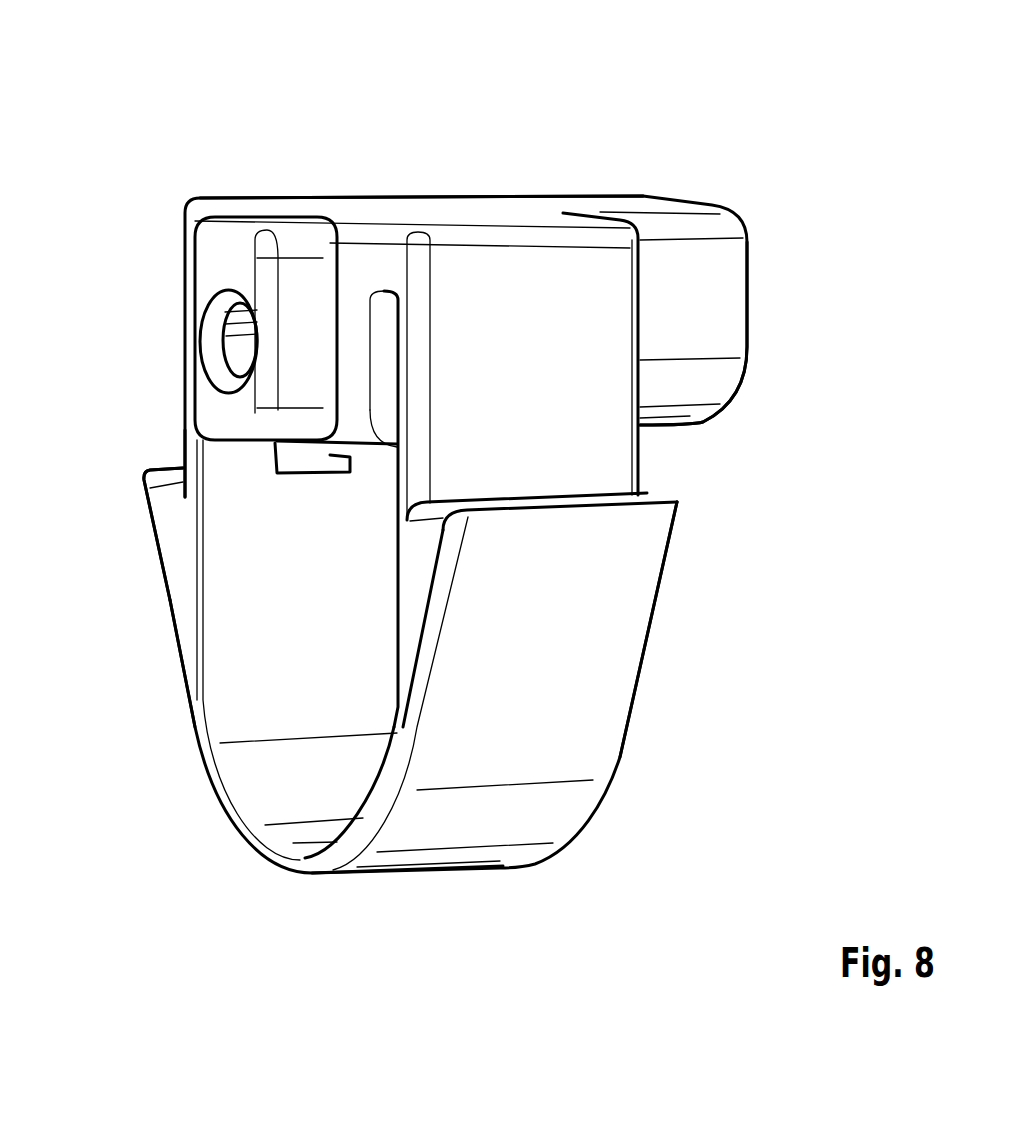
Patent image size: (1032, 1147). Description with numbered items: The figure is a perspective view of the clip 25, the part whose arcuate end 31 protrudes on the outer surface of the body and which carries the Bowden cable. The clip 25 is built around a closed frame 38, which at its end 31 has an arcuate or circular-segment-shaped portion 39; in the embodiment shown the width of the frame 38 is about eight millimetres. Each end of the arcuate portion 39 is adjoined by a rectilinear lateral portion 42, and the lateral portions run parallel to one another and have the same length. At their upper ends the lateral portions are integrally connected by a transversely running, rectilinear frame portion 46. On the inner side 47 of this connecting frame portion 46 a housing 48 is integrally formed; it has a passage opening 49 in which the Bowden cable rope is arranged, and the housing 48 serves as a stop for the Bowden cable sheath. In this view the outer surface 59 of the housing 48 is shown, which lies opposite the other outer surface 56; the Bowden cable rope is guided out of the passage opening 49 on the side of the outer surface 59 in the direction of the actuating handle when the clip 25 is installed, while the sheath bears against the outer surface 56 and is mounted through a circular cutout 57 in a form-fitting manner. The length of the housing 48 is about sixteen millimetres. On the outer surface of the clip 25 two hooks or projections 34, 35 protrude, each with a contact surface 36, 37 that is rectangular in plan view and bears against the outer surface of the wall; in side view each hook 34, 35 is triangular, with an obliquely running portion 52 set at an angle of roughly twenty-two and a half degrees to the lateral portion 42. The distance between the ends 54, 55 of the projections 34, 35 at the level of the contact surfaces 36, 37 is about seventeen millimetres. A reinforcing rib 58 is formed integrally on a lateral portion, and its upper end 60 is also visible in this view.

The clip 25 is at (407, 925).
The arcuate end 31 is at (418, 889).
The hook 34 is at (101, 490).
The hook 35 is at (601, 593).
The contact surface 36 is at (182, 470).
The contact surface 37 is at (647, 488).
The closed frame 38 is at (400, 656).
The arcuate portion 39 is at (363, 656).
The lateral portion 42 is at (250, 570).
The transversely running frame portion 46 is at (441, 212).
The inner side 47 is at (290, 793).
The housing 48 is at (688, 200).
The passage opening 49 is at (240, 348).
The obliquely running portion 52 is at (580, 663).
The end of projection 54 is at (143, 470).
The end of projection 55 is at (643, 500).
The outer surface of housing 56 is at (787, 333).
The circular cutout 57 is at (747, 285).
The reinforcing rib 58 is at (336, 496).
The outer surface of housing 59 is at (207, 272).
The upper end of reinforcing rib 60 is at (312, 466).